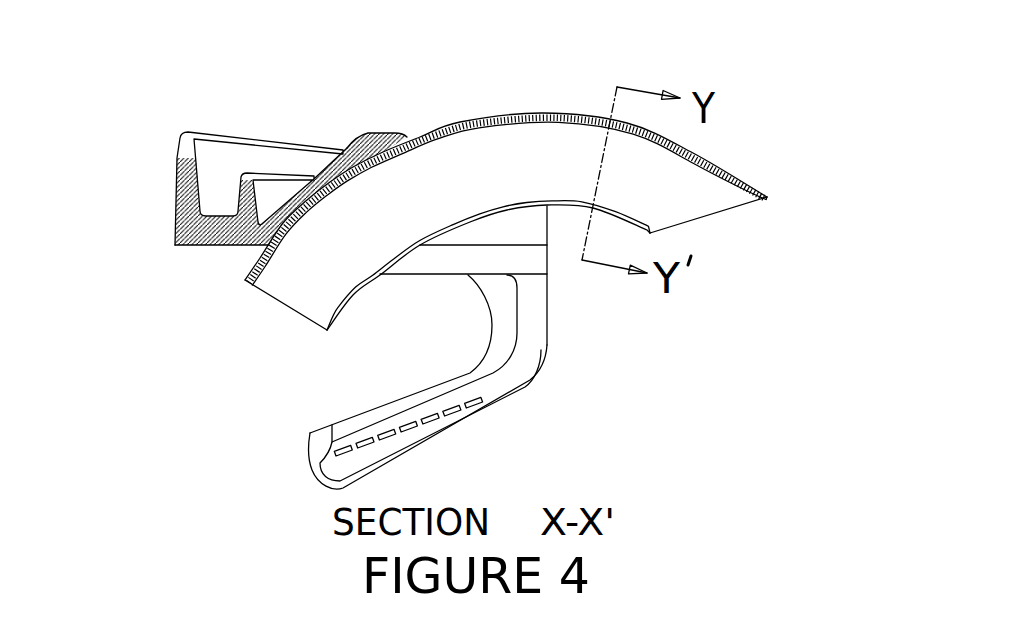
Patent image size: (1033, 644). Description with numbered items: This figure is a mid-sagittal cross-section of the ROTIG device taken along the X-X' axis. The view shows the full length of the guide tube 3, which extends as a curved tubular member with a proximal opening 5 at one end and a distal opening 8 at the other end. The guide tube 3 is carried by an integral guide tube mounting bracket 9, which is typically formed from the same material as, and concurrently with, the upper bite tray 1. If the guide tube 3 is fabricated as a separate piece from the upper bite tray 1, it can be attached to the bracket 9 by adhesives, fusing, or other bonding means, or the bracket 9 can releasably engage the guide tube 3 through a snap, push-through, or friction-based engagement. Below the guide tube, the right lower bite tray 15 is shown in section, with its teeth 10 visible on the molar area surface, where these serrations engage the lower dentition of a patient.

The upper bite tray 1 is at (162, 128).
The guide tube 3 is at (532, 95).
The proximal opening 5 is at (265, 312).
The distal opening 8 is at (723, 227).
The guide tube mounting bracket 9 is at (373, 127).
The teeth 10 is at (540, 372).
The right lower bite tray 15 is at (567, 347).